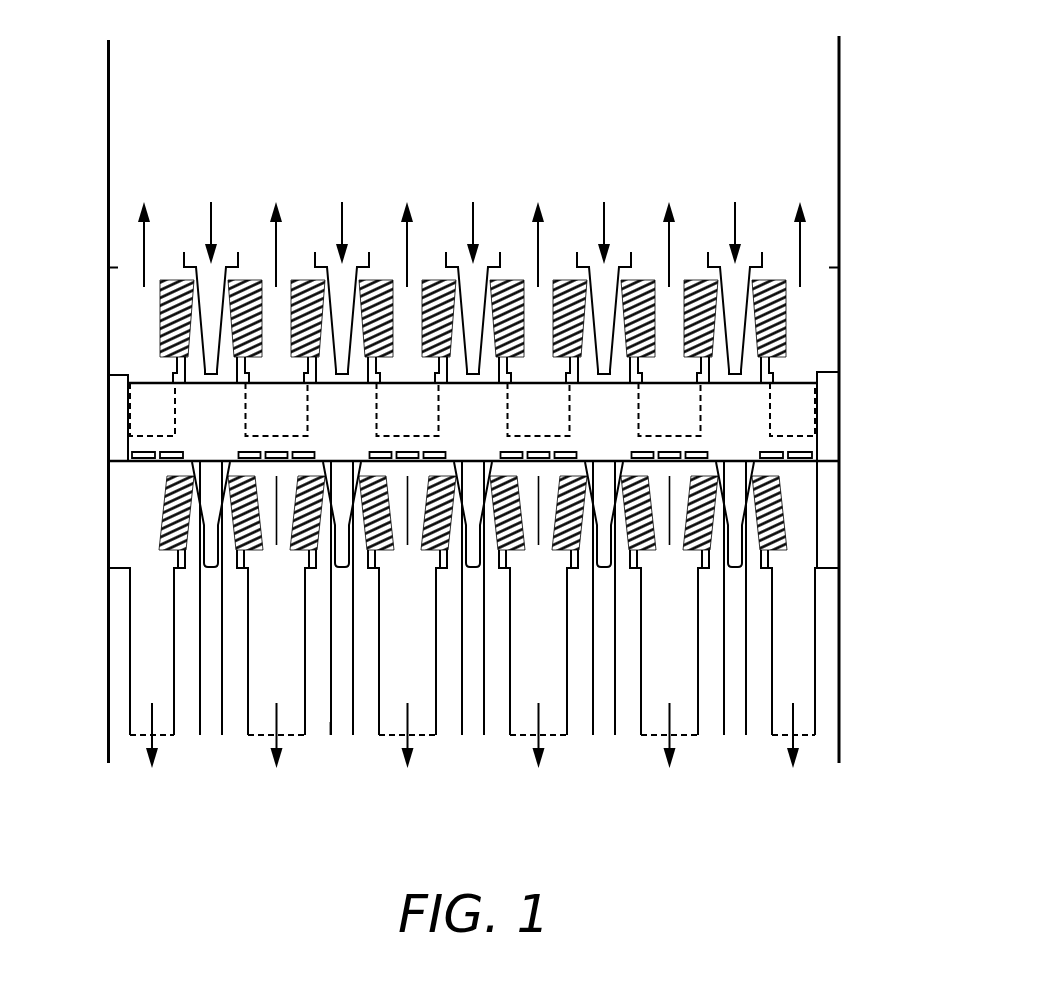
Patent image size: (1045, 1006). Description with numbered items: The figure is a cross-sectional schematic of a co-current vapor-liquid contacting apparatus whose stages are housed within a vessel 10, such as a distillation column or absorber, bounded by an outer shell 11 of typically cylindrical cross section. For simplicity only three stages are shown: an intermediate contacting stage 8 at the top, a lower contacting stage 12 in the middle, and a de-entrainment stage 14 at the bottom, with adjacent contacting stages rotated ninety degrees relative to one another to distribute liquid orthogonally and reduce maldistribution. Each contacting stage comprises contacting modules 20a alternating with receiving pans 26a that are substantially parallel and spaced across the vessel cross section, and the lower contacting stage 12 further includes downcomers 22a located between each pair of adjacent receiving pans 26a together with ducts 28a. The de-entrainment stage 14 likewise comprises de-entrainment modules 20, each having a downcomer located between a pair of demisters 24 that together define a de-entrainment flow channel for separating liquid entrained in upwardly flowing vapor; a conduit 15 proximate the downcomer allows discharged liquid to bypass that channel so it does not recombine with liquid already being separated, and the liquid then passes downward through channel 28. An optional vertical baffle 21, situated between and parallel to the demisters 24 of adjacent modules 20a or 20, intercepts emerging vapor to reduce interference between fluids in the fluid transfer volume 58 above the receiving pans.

The vessel 10 is at (860, 52).
The outer shell 11 is at (109, 136).
The intermediate contacting stage 8 is at (858, 298).
The contacting module 20a is at (140, 318).
The demister 24 is at (526, 300).
The fluid transfer volume 58 is at (665, 310).
The lower contacting stage 12 is at (864, 398).
The receiving pan 26a is at (823, 372).
The duct 28a is at (503, 387).
The downcomer 22a is at (817, 443).
The de-entrainment stage 14 is at (860, 490).
The de-entrainment module 20 is at (800, 524).
The vertical baffle 21 is at (668, 546).
The conduit 15 is at (330, 722).
The exhaust channel 28 is at (507, 722).